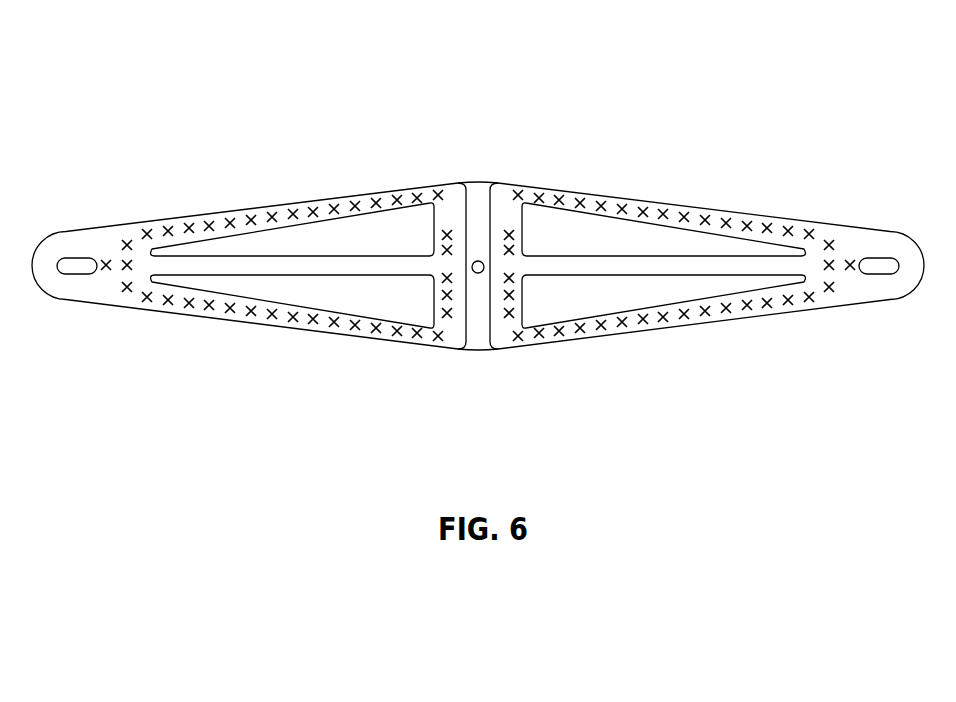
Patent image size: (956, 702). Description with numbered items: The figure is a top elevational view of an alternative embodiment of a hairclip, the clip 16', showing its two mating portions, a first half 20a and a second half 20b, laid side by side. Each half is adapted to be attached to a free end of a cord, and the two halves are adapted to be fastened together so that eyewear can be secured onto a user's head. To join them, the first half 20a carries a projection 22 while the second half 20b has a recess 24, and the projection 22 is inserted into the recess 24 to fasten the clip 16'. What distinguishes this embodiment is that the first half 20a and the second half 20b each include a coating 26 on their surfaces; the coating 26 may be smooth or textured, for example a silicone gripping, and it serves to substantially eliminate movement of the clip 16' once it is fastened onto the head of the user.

The clip 16' is at (478, 187).
The first half 20a is at (845, 304).
The second half 20b is at (283, 326).
The projection 22 is at (883, 260).
The recess 24 is at (73, 259).
The coating 26 is at (356, 204).